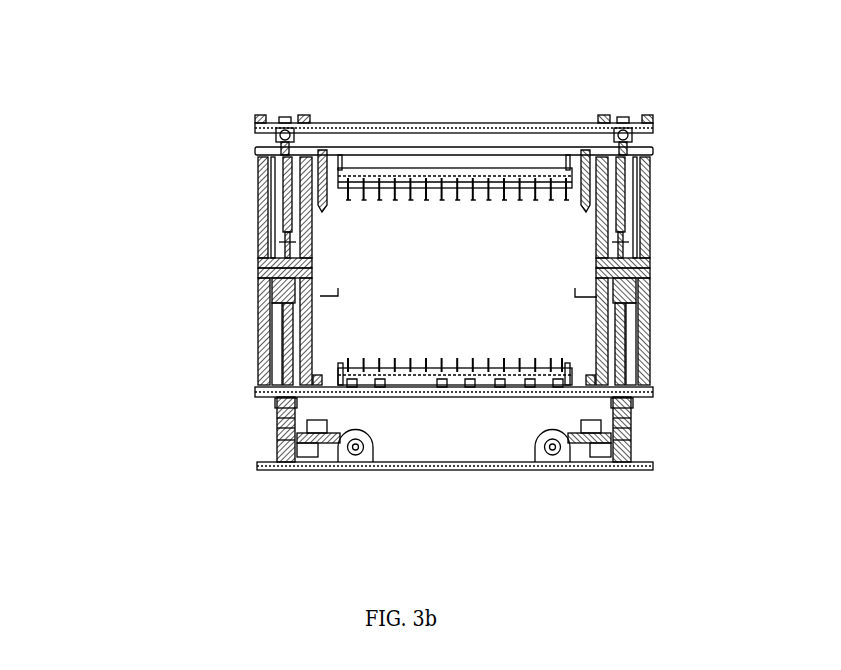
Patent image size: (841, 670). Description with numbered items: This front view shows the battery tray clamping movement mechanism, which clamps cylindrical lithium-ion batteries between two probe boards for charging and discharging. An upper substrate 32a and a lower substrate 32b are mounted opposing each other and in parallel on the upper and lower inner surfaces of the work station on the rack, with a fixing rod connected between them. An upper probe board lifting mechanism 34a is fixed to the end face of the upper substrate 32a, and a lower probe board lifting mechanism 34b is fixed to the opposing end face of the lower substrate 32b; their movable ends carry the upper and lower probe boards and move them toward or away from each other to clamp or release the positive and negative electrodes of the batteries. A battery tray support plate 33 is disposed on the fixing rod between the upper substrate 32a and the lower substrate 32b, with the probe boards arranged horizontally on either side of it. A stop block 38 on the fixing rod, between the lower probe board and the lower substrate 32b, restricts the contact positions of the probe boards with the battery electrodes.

The upper substrate 32a is at (386, 102).
The lower substrate 32b is at (327, 268).
The battery tray support plate 33 is at (531, 420).
The upper probe board lifting mechanism 34a is at (189, 151).
The lower probe board lifting mechanism 34b is at (222, 342).
The stop block 38 is at (366, 497).